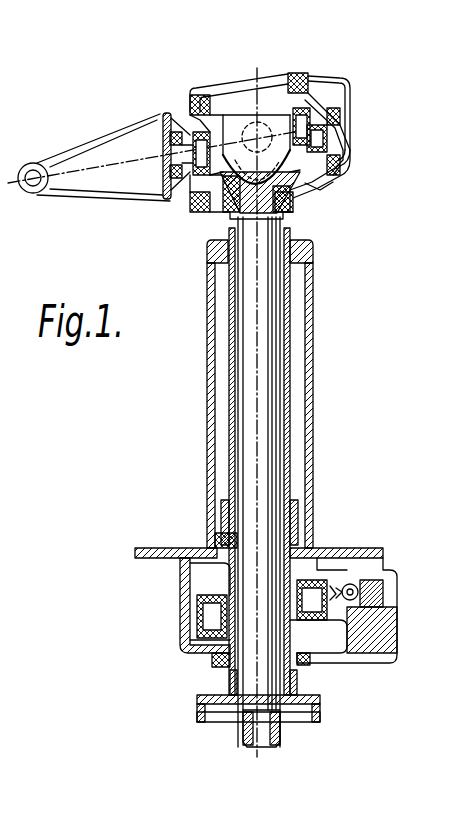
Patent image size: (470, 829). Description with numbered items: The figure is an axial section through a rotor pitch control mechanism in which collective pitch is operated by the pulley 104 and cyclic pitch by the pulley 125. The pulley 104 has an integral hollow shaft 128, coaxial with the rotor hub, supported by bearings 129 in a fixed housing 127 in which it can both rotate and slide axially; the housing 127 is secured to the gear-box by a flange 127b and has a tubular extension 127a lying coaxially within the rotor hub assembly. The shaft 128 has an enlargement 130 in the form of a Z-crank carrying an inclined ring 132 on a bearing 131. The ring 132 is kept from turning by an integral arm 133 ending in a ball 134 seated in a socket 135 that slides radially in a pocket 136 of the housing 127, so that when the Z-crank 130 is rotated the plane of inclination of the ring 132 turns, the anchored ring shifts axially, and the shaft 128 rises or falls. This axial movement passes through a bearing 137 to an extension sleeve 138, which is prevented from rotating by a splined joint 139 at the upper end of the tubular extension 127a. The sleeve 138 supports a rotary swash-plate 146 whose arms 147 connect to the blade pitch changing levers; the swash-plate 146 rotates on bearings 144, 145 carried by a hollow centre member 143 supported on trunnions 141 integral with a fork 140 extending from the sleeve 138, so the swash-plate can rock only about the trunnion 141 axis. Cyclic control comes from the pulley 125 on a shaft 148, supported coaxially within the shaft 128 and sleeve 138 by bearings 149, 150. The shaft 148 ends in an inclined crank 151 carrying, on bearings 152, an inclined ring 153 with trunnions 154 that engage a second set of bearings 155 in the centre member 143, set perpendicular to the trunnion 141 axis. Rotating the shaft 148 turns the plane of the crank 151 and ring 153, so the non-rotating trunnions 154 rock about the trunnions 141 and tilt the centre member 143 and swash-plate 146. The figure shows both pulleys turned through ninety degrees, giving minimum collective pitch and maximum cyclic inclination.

The pulley 104 is at (320, 700).
The pulley 125 is at (317, 722).
The fixed housing 127 is at (390, 650).
The tubular extension 127a is at (313, 453).
The flange 127b is at (138, 558).
The hollow shaft 128 is at (297, 683).
The bearings 129 is at (217, 537).
The enlargement 130 is at (295, 624).
The bearing 131 is at (212, 621).
The inclined ring 132 is at (200, 608).
The arm 133 is at (336, 590).
The ball 134 is at (356, 587).
The socket 135 is at (340, 595).
The pocket 136 is at (382, 612).
The bearing 137 is at (298, 520).
The extension sleeve 138 is at (290, 395).
The splined joint 139 is at (312, 252).
The fork 140 is at (257, 400).
The trunnions 141 is at (245, 125).
The hollow centre member 143 is at (340, 167).
The bearing 144 is at (337, 182).
The bearing 145 is at (303, 78).
The rotary swash-plate 146 is at (345, 101).
The arms 147 is at (92, 186).
The shaft 148 is at (268, 340).
The bearing 149 is at (232, 722).
The bearing 150 is at (300, 207).
The inclined crank 151 is at (353, 153).
The bearings 152 is at (347, 150).
The inclined ring 153 is at (197, 197).
The trunnions 154 is at (165, 165).
The bearings 155 is at (168, 113).